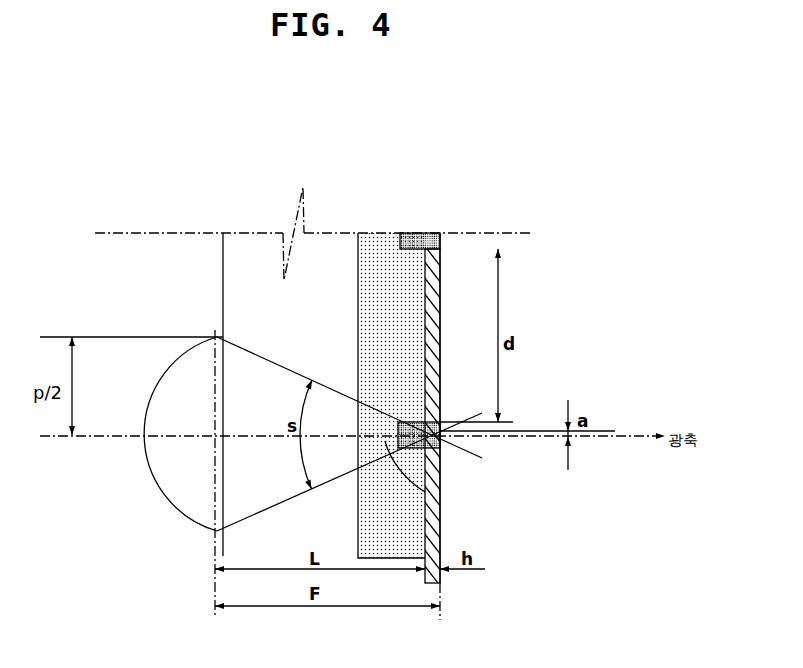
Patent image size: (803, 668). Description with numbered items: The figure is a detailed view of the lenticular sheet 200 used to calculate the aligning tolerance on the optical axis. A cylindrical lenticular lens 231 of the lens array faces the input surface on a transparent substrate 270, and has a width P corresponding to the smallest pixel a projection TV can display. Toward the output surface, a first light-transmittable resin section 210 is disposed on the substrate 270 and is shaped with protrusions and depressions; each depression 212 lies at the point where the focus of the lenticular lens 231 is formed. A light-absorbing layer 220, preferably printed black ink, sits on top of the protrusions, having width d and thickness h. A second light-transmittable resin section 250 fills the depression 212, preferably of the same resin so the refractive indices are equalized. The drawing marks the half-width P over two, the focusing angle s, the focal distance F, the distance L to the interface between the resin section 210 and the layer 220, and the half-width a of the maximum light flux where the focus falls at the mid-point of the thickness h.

The lenticular sheet 200 is at (434, 163).
The first light-transmittable resin section 210 is at (381, 240).
The depression 212 is at (432, 493).
The light-absorbing layer 220 is at (430, 246).
The cylindrical lenticular lens 231 is at (172, 507).
The second light-transmittable resin section 250 is at (443, 450).
The transparent substrate 270 is at (257, 243).